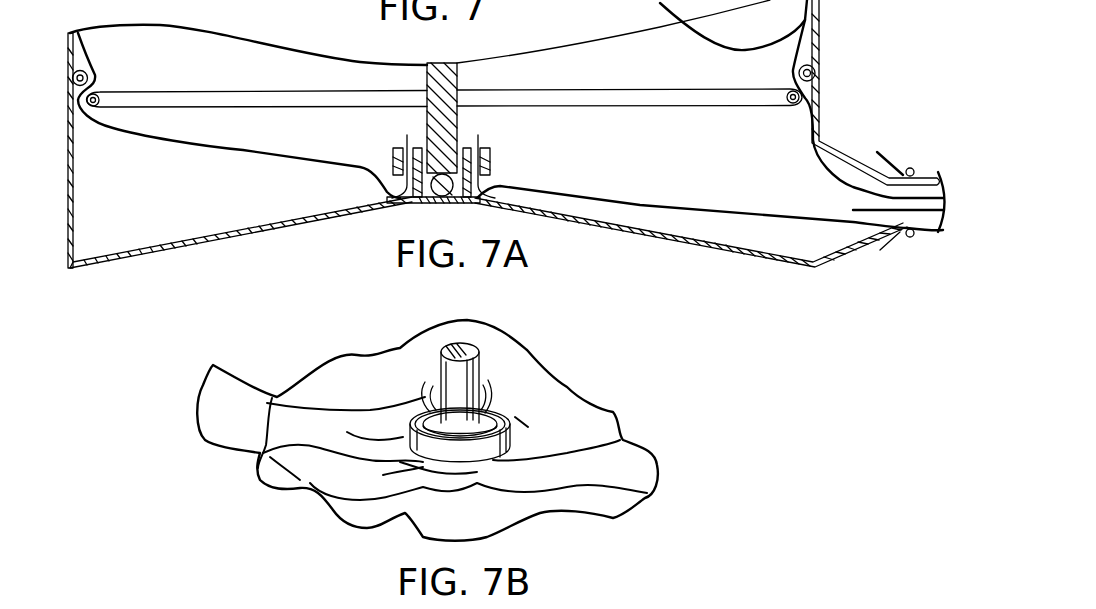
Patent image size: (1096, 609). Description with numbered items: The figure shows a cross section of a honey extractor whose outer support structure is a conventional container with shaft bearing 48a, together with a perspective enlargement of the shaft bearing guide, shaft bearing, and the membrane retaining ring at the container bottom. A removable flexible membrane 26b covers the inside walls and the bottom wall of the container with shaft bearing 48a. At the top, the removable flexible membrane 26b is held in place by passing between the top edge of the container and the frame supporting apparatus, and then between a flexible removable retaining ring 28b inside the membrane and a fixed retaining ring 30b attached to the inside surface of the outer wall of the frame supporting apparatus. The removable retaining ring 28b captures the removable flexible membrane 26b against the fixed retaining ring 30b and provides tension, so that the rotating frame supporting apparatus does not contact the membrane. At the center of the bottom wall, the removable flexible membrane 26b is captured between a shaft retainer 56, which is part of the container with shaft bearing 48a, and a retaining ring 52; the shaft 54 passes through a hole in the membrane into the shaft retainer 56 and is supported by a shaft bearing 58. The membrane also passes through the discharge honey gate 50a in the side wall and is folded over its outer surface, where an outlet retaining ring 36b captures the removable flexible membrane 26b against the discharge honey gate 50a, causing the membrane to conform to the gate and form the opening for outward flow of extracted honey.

In FIG. 7A, the removable flexible membrane 26b is at (243, 150).
In FIG. 7B, the removable flexible membrane 26b is at (277, 396).
In FIG. 7A, the flexible removable retaining ring 28b is at (797, 98).
In FIG. 7A, the fixed retaining ring 30b is at (815, 72).
In FIG. 7A, the outlet retaining ring 36b is at (910, 237).
In FIG. 7A, the container with shaft bearing 48a is at (113, 258).
In FIG. 7A, the discharge honey gate 50a is at (842, 254).
In FIG. 7A, the retaining ring 52 is at (492, 163).
In FIG. 7B, the retaining ring 52 is at (512, 436).
In FIG. 7A, the shaft 54 is at (450, 128).
In FIG. 7B, the shaft 54 is at (458, 344).
In FIG. 7A, the shaft retainer 56 is at (400, 198).
In FIG. 7B, the shaft retainer 56 is at (490, 378).
In FIG. 7A, the shaft bearing 58 is at (441, 198).